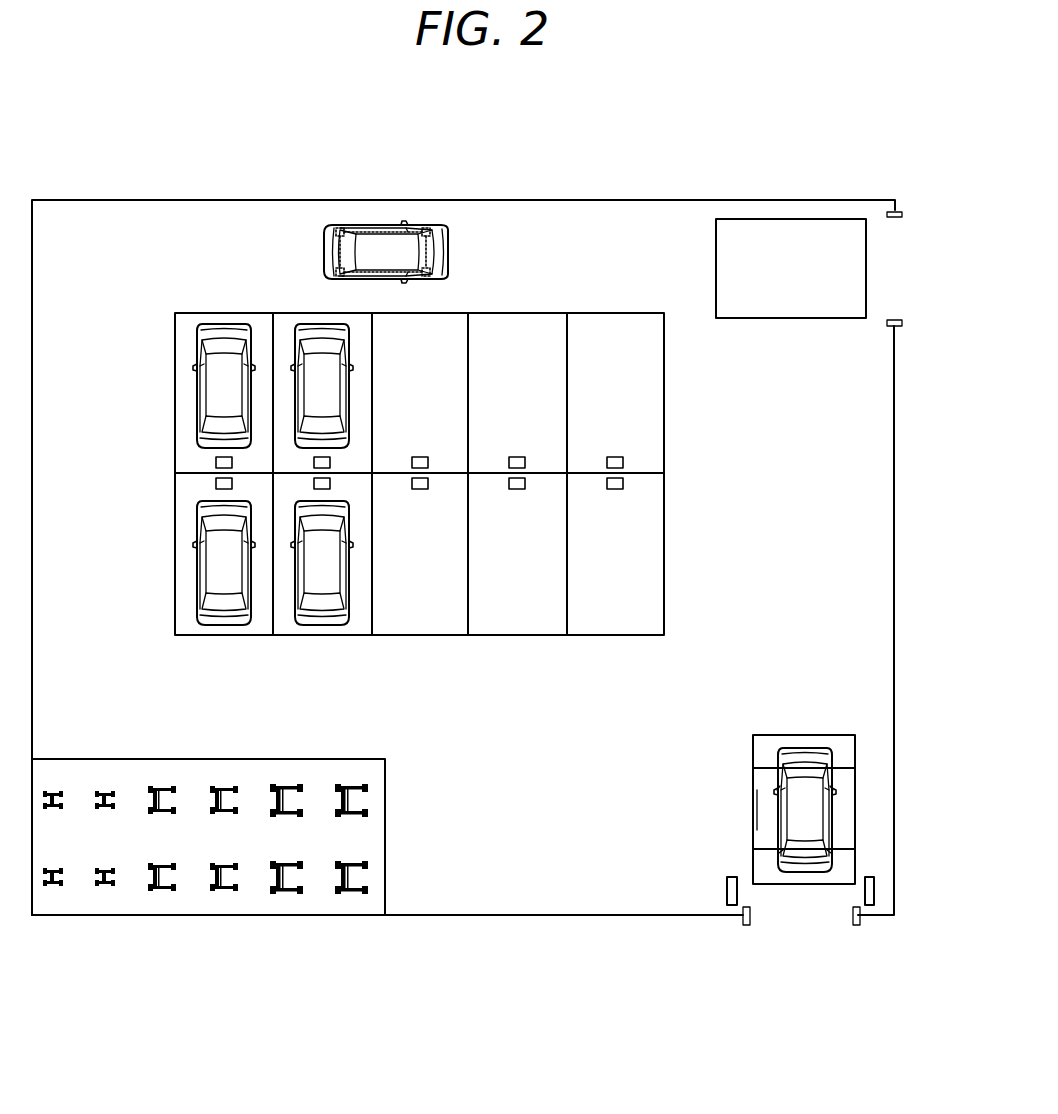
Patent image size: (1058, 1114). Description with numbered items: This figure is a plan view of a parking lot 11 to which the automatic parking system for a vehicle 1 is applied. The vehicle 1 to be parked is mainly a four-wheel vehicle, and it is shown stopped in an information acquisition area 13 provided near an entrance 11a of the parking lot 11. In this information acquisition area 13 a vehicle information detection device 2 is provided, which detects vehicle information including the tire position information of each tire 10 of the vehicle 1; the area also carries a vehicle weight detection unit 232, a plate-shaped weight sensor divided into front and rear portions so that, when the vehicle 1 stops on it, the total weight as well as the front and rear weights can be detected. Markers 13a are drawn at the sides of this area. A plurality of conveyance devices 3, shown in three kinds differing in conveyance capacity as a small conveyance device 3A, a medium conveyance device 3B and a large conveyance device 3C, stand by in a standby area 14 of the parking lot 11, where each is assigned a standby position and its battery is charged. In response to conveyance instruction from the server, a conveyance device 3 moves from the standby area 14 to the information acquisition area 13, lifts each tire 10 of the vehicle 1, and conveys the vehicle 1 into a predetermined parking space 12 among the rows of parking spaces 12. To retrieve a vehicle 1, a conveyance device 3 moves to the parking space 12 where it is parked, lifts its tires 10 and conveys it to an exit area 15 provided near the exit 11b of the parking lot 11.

The vehicle 1 is at (320, 228).
The vehicle information detection device 2 is at (697, 770).
The conveyance device 3 is at (445, 228).
The small conveyance device 3A is at (104, 790).
The medium conveyance device 3B is at (222, 786).
The large conveyance device 3C is at (352, 784).
The tire 10 is at (790, 850).
The parking lot 11 is at (672, 208).
The entrance 11a is at (830, 920).
The exit 11b is at (890, 236).
The parking space 12 is at (232, 320).
The information acquisition area 13 is at (832, 732).
The transfer area marker post 13a is at (727, 893).
The standby area 14 is at (405, 778).
The exit area 15 is at (772, 328).
The vehicle weight detection unit 232 is at (765, 841).